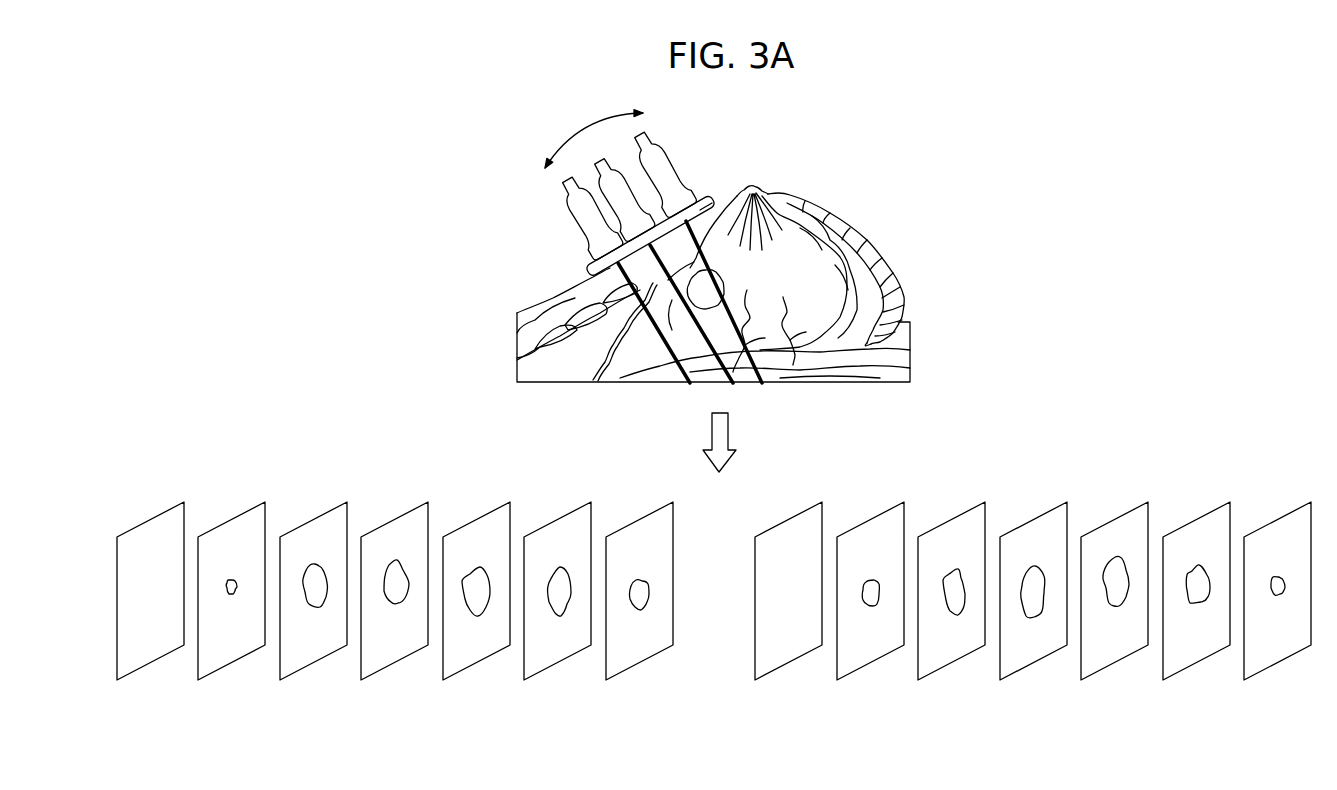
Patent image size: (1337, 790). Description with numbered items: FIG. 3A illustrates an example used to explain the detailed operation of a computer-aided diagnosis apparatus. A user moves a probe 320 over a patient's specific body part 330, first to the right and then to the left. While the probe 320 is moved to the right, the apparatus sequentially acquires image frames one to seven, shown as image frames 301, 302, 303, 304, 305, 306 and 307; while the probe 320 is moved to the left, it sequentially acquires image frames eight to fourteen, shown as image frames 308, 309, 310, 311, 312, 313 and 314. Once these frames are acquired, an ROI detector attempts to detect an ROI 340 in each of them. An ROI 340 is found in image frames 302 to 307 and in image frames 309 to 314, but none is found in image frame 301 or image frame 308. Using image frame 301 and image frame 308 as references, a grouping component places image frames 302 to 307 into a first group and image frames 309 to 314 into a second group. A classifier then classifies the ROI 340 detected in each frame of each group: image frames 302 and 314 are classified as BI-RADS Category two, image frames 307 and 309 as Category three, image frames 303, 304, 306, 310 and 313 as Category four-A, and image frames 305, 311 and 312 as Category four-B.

The image frame 1 301 is at (150, 663).
The image frame 2 302 is at (231, 663).
The image frame 3 303 is at (313, 663).
The image frame 4 304 is at (394, 663).
The image frame 5 305 is at (476, 663).
The image frame 6 306 is at (557, 663).
The image frame 7 307 is at (639, 663).
The image frame 8 308 is at (788, 663).
The image frame 9 309 is at (870, 663).
The image frame 10 310 is at (951, 663).
The image frame 11 311 is at (1033, 663).
The image frame 12 312 is at (1114, 663).
The image frame 13 313 is at (1196, 663).
The image frame 14 314 is at (1277, 663).
The probe 320 is at (577, 234).
The patient's specific body part 330 is at (840, 213).
The ROI 340 is at (762, 197).